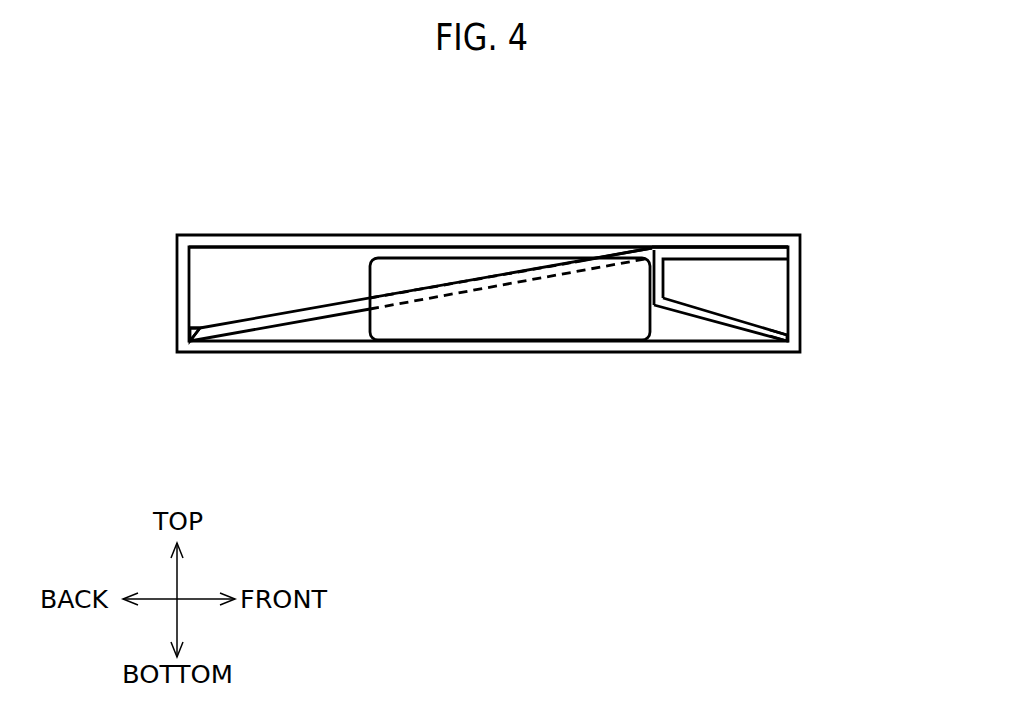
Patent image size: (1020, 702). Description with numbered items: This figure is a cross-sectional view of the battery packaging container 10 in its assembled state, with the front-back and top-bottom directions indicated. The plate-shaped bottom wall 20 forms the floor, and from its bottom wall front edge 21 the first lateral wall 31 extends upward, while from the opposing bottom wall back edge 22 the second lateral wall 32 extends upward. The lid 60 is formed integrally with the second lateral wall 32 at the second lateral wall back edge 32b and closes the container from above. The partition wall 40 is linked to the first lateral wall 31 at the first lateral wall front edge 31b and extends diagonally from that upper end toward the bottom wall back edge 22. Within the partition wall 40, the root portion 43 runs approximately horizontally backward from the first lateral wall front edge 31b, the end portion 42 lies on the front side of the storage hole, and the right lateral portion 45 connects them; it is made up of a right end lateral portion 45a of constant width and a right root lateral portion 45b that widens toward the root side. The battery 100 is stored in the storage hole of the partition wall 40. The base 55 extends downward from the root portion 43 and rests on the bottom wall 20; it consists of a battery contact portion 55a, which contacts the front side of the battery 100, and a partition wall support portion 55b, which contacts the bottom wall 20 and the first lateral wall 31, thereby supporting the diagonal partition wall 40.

The battery packaging container 10 is at (493, 293).
The bottom wall 20 is at (476, 350).
The bottom wall front edge 21 is at (776, 324).
The bottom wall back edge 22 is at (218, 324).
The first lateral wall 31 is at (698, 216).
The first lateral wall front edge 31b is at (778, 245).
The second lateral wall 32 is at (285, 256).
The second lateral wall back edge 32b is at (213, 257).
The partition wall 40 is at (524, 293).
The end portion 42 is at (421, 387).
The root portion 43 is at (757, 252).
The right lateral portion 45 is at (515, 274).
The right end lateral portion 45a is at (472, 289).
The right root lateral portion 45b is at (636, 255).
The base 55 is at (778, 288).
The battery contact portion 55a is at (660, 278).
The partition wall support portion 55b is at (728, 320).
The lid 60 is at (383, 242).
The battery 100 is at (576, 312).